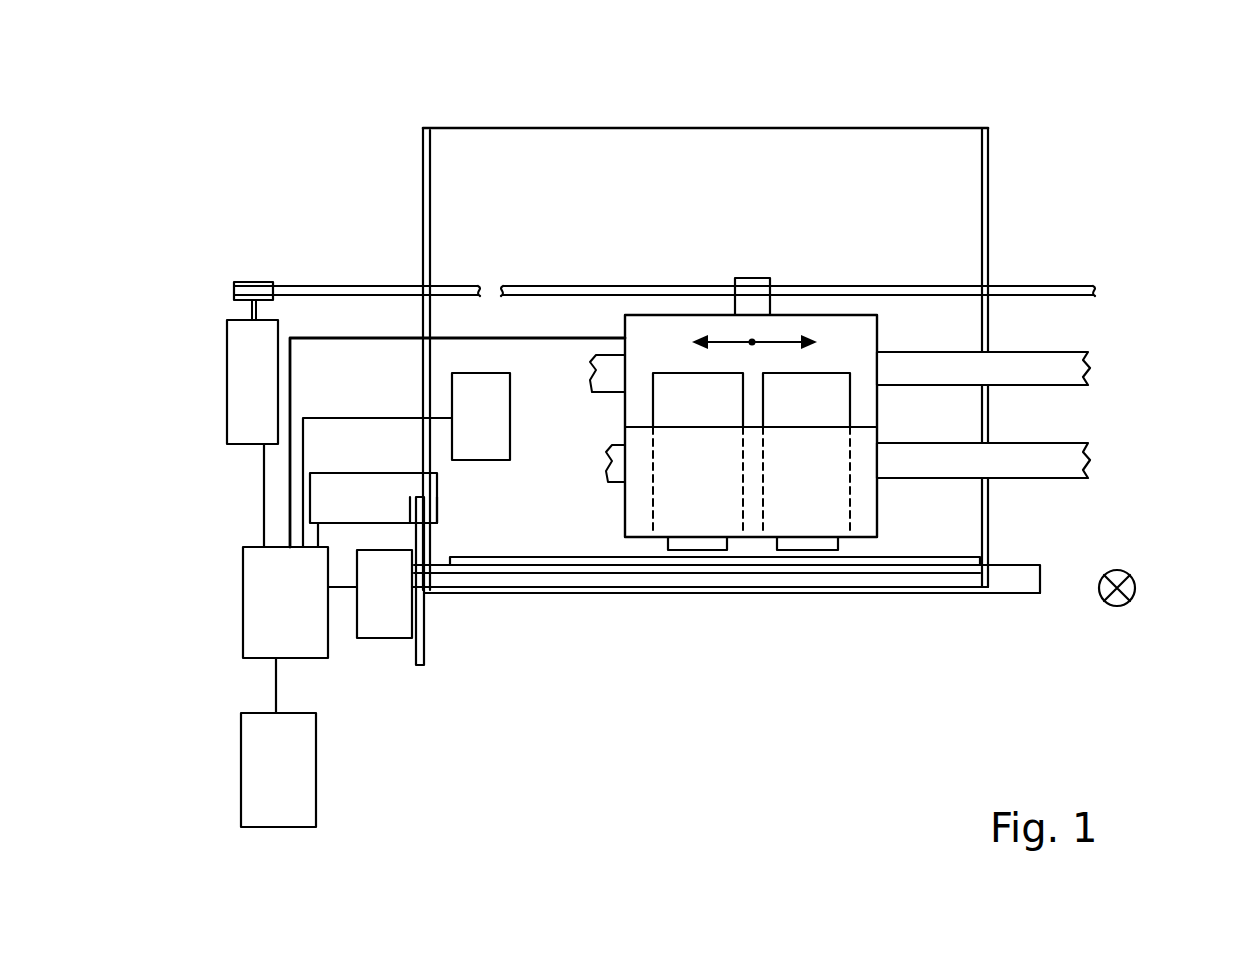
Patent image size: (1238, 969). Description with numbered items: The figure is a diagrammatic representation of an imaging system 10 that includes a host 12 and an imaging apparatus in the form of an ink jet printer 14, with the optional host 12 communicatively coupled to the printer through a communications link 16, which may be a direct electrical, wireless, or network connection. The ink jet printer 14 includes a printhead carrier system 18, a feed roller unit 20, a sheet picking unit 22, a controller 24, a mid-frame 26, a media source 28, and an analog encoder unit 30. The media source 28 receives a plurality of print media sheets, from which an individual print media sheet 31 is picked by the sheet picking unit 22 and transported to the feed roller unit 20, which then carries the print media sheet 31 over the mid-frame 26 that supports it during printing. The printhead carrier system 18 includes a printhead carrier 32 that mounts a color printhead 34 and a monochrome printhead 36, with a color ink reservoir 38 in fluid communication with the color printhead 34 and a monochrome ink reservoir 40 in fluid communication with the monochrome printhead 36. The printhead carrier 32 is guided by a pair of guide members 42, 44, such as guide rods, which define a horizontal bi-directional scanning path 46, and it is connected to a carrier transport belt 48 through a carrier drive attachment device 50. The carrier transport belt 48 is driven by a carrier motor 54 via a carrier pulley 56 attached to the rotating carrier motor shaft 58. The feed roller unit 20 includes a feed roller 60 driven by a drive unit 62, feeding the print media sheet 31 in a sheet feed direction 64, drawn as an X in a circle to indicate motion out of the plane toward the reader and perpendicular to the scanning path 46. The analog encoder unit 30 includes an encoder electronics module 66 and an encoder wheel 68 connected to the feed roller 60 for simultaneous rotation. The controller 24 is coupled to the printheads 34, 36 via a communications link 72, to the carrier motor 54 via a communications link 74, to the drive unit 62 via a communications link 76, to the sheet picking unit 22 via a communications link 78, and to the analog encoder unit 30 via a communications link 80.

The imaging system 10 is at (303, 118).
The host 12 is at (278, 770).
The ink jet printer 14 is at (835, 96).
The communications link 16 is at (276, 681).
The printhead carrier system 18 is at (802, 214).
The feed roller unit 20 is at (455, 680).
The sheet picking unit 22 is at (481, 416).
The controller 24 is at (285, 602).
The mid-frame 26 is at (929, 594).
The media source 28 is at (462, 127).
The analog encoder unit 30 is at (460, 507).
The print media sheet 31 is at (965, 557).
The printhead carrier 32 is at (878, 421).
The color printhead 34 is at (848, 548).
The monochrome printhead 36 is at (668, 547).
The color ink reservoir 38 is at (828, 373).
The monochrome ink reservoir 40 is at (684, 373).
The guide member 42 is at (1040, 352).
The guide member 44 is at (1040, 443).
The bi-directional scanning path 46 is at (755, 340).
The carrier transport belt 48 is at (341, 285).
The carrier drive attachment device 50 is at (752, 278).
The carrier motor 54 is at (227, 427).
The carrier pulley 56 is at (248, 282).
The carrier motor shaft 58 is at (250, 306).
The feed roller 60 is at (535, 595).
The drive unit 62 is at (395, 594).
The sheet feed direction 64 is at (1134, 579).
The encoder electronics module 66 is at (373, 498).
The encoder wheel 68 is at (425, 626).
The communications link 72 is at (291, 398).
The communications link 74 is at (263, 505).
The communications link 76 is at (342, 590).
The communications link 78 is at (372, 418).
The communications link 80 is at (318, 529).